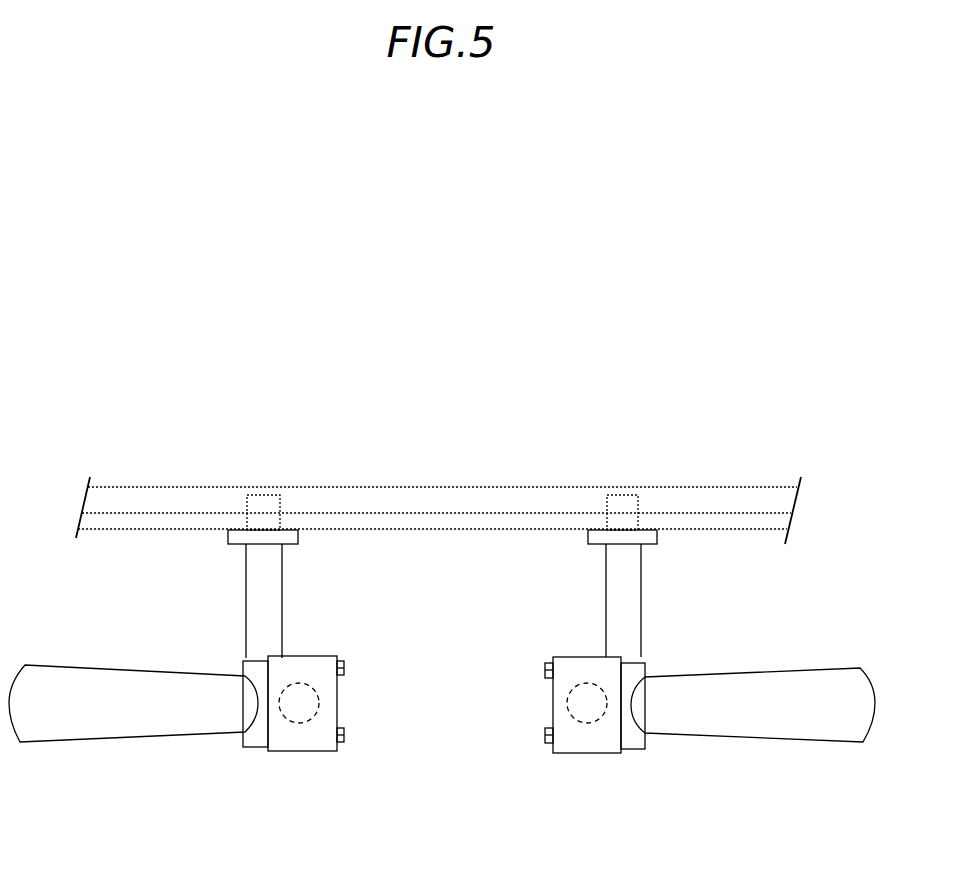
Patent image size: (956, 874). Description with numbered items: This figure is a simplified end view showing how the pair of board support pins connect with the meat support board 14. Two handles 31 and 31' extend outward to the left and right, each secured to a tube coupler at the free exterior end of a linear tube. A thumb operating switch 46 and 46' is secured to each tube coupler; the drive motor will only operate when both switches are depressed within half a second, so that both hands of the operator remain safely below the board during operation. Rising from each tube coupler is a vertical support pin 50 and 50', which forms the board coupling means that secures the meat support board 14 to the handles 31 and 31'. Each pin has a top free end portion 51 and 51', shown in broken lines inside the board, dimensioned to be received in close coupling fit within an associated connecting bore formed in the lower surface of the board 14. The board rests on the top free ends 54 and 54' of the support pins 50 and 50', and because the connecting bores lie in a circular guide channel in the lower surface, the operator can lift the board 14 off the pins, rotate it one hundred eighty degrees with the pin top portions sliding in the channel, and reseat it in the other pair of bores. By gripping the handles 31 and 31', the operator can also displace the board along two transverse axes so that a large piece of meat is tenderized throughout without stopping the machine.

The meat support board 14 is at (445, 490).
The top free end of support pin 54 is at (263, 469).
The top free end portion of support pin 51 is at (305, 476).
The vertical support pin 50 is at (315, 601).
The thumb operating switch 46 is at (313, 741).
The handle 31 is at (133, 745).
The top free end of support pin 54' is at (622, 469).
The top free end portion of support pin 51' is at (578, 476).
The vertical support pin 50' is at (568, 600).
The thumb operating switch 46' is at (573, 741).
The handle 31' is at (753, 747).